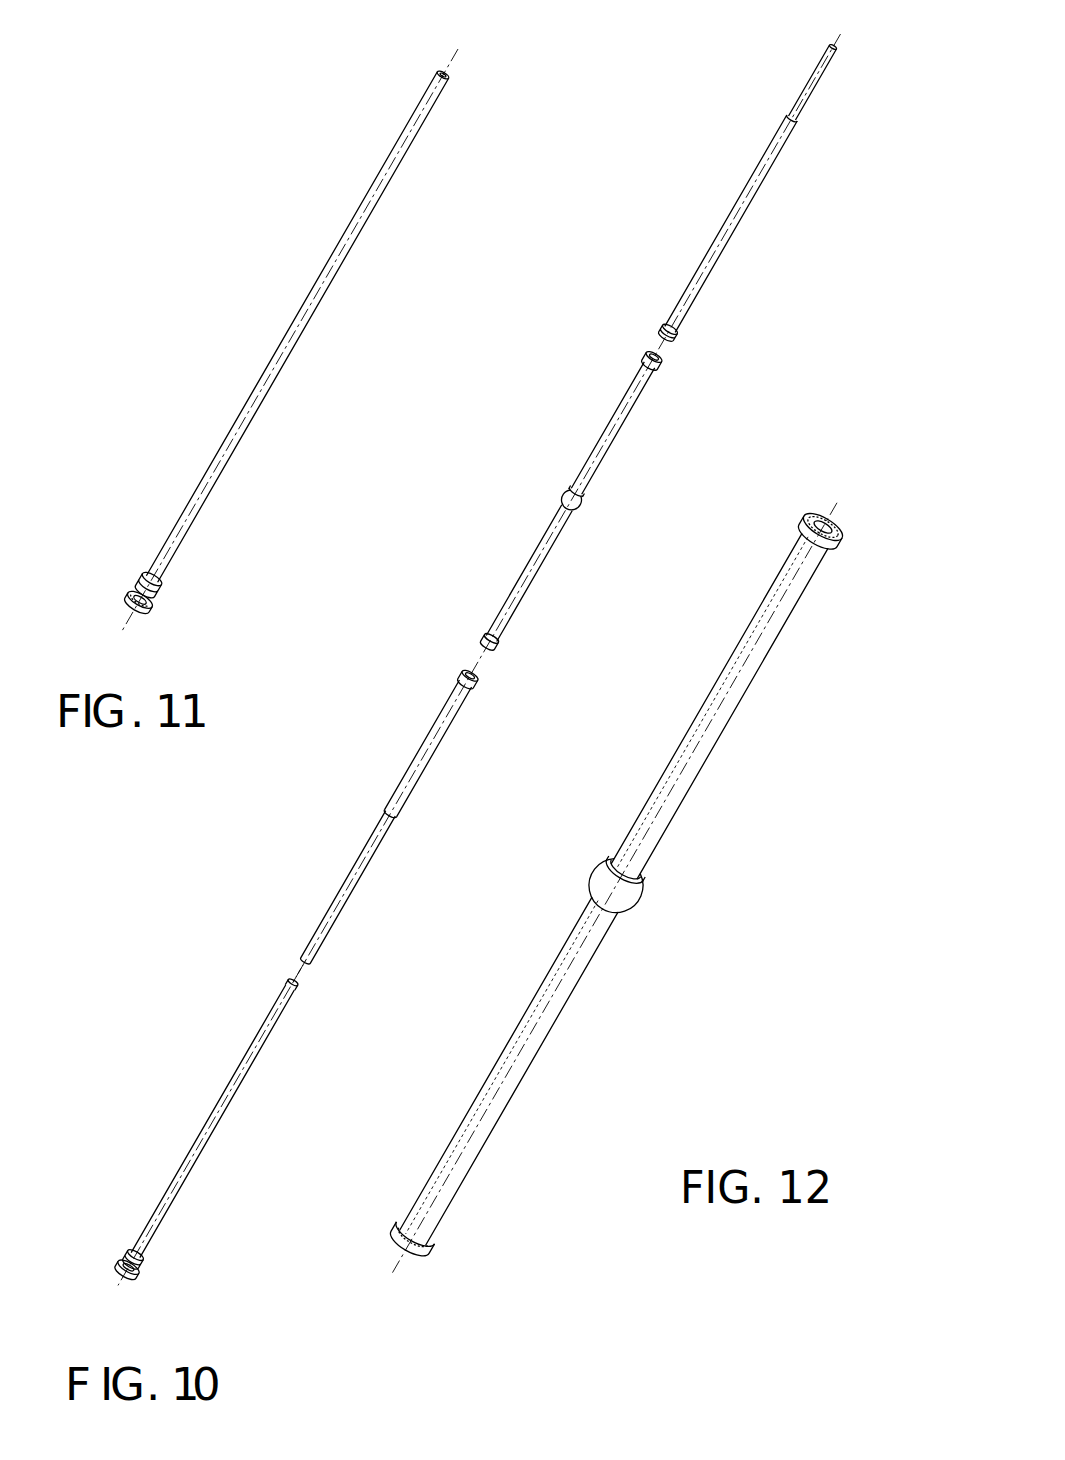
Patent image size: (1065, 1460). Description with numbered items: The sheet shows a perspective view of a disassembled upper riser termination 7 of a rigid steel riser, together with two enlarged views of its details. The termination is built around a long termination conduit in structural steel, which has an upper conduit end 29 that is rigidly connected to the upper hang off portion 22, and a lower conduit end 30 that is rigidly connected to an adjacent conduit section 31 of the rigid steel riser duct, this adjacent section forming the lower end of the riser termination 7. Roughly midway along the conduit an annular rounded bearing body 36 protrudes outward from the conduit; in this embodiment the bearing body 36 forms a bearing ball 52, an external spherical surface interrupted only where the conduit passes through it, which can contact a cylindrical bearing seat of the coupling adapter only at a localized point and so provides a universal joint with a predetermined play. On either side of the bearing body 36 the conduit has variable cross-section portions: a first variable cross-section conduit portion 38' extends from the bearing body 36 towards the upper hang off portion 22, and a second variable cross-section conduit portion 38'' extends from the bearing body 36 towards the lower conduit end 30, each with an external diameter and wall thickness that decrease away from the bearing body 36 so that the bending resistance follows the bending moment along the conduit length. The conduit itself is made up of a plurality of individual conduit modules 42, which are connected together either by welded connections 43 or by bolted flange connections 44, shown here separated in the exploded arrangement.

In FIG. 10, the upper riser termination 7 is at (465, 689).
In FIG. 11, the upper hang off portion 22 is at (150, 613).
In FIG. 10, the upper hang off portion 22 is at (137, 1272).
In FIG. 11, the upper conduit end 29 is at (158, 587).
In FIG. 10, the upper conduit end 29 is at (125, 1258).
In FIG. 10, the lower conduit end 30 is at (795, 128).
In FIG. 10, the adjacent conduit section 31 is at (815, 97).
In FIG. 10, the annular rounded bearing body 36 is at (565, 501).
In FIG. 12, the annular rounded bearing body 36 is at (604, 858).
In FIG. 10, the first variable cross-section conduit portion 38' is at (513, 578).
In FIG. 12, the first variable cross-section conduit portion 38' is at (513, 1071).
In FIG. 10, the second variable cross-section conduit portion 38'' is at (608, 412).
In FIG. 12, the second variable cross-section conduit portion 38'' is at (732, 706).
In FIG. 11, the conduit modules 42 is at (295, 290).
In FIG. 10, the conduit modules 42 is at (745, 227).
In FIG. 12, the conduit modules 42 is at (575, 1016).
In FIG. 10, the welded connections 43 is at (332, 952).
In FIG. 10, the bolted flange connections 44 is at (690, 333).
In FIG. 12, the bolted flange connections 44 is at (850, 525).
In FIG. 10, the bearing ball 52 is at (585, 508).
In FIG. 12, the bearing ball 52 is at (642, 896).